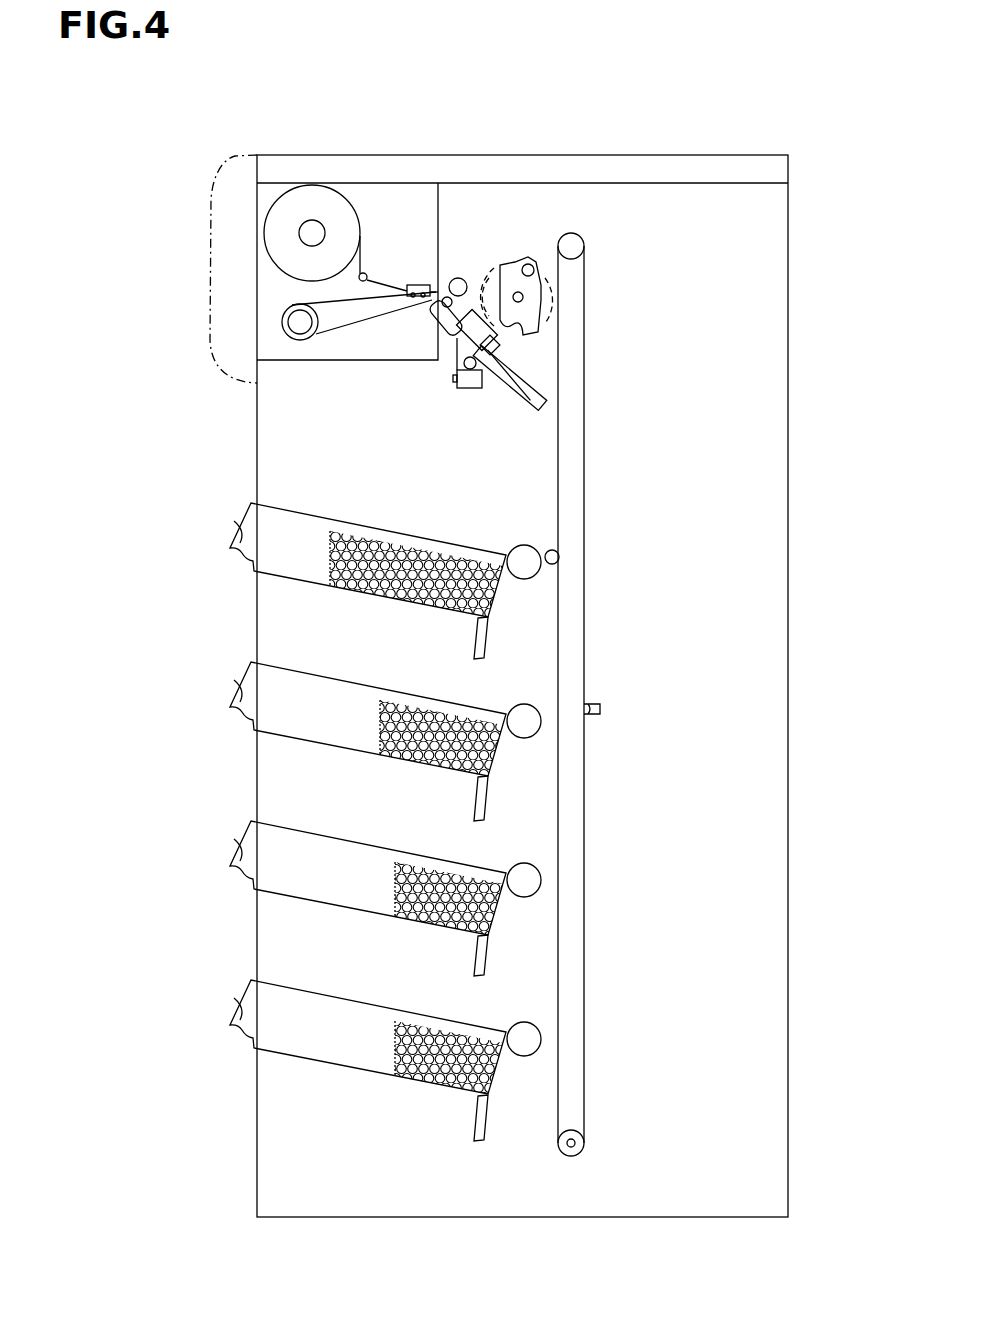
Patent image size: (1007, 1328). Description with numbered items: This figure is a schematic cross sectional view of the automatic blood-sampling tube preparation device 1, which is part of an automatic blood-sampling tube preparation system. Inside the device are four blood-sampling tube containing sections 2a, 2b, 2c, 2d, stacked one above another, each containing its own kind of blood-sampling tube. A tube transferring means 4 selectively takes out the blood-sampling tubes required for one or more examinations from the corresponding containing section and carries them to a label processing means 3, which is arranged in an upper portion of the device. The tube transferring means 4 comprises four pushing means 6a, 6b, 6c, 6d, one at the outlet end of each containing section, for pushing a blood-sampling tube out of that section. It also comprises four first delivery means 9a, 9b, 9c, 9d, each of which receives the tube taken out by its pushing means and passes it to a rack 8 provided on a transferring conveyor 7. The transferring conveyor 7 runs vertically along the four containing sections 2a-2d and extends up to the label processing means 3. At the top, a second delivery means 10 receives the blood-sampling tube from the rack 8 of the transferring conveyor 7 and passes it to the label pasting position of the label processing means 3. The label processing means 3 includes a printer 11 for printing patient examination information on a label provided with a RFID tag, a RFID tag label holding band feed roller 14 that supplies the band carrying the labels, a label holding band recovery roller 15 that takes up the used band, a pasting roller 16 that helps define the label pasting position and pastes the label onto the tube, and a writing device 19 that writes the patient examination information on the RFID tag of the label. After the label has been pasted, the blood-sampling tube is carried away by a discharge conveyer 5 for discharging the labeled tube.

The automatic blood-sampling tube preparation device 1 is at (763, 130).
The blood-sampling tube containing section 2a is at (242, 1002).
The blood-sampling tube containing section 2b is at (241, 842).
The blood-sampling tube containing section 2c is at (244, 682).
The blood-sampling tube containing section 2d is at (244, 522).
The label processing means 3 is at (314, 225).
The tube transferring means 4 is at (700, 694).
The discharge conveyer 5 is at (467, 391).
The pushing means 6a is at (473, 1128).
The pushing means 6b is at (473, 960).
The pushing means 6c is at (473, 798).
The pushing means 6d is at (473, 635).
The transferring conveyor 7 is at (587, 938).
The rack 8 is at (553, 567).
The first delivery means 9a is at (519, 1059).
The first delivery means 9b is at (519, 901).
The first delivery means 9c is at (519, 742).
The first delivery means 9d is at (535, 553).
The second delivery means 10 is at (527, 310).
The printer 11 is at (408, 285).
The RFID tag label holding band feed roller 14 is at (318, 193).
The label holding band recovery roller 15 is at (283, 326).
The pasting roller 16 is at (458, 278).
The writing device 19 is at (414, 304).